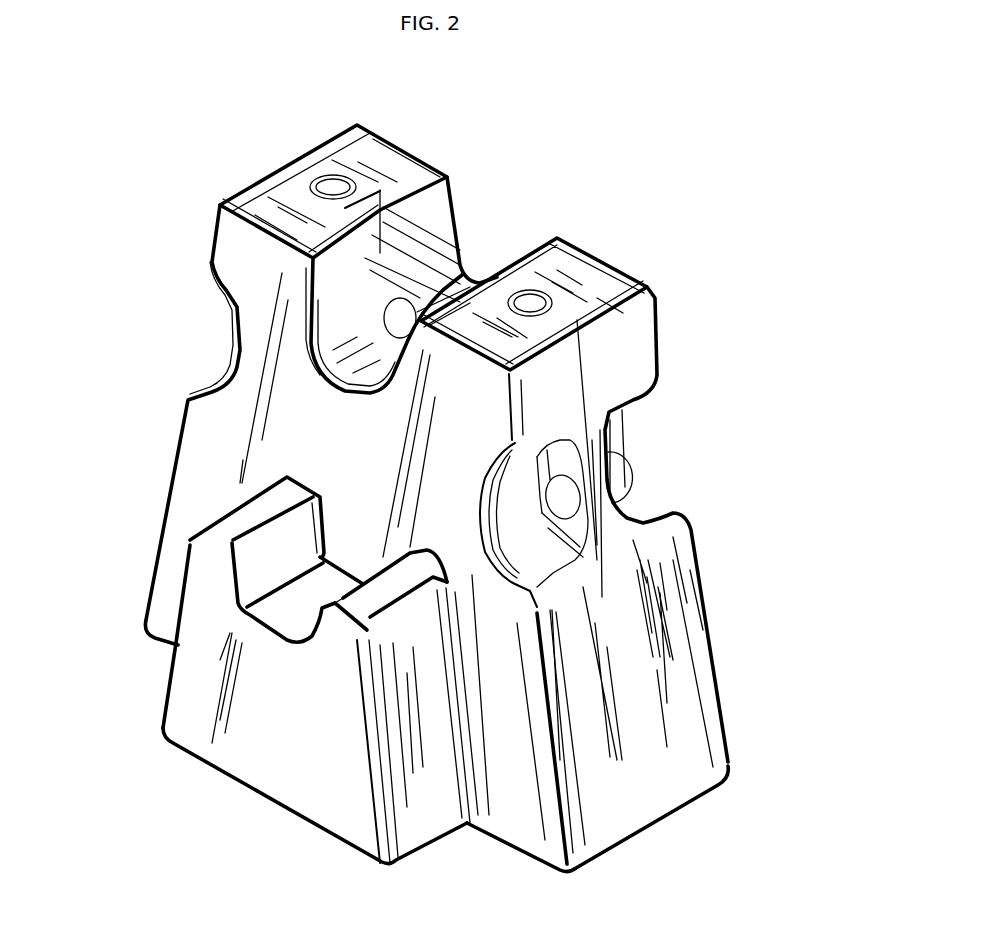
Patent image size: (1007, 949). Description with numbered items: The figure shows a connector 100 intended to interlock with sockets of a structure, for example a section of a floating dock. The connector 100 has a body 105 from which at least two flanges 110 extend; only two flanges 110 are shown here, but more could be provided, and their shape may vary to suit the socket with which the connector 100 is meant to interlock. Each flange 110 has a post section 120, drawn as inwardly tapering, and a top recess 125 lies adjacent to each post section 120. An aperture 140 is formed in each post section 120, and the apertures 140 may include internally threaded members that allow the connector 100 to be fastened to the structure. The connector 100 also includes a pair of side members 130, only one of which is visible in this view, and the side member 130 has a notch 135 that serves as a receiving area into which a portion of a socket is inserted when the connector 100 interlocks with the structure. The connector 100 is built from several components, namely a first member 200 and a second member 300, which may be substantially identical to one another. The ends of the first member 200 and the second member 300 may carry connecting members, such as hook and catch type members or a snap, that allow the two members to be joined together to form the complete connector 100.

The connector 100 is at (668, 138).
The body 105 is at (714, 431).
The flanges 110 is at (228, 252).
The post section 120 is at (260, 202).
The top recess 125 is at (487, 233).
The side members 130 is at (277, 757).
The notch 135 is at (255, 650).
The apertures 140 is at (333, 190).
The first member 200 is at (592, 833).
The second member 300 is at (687, 780).